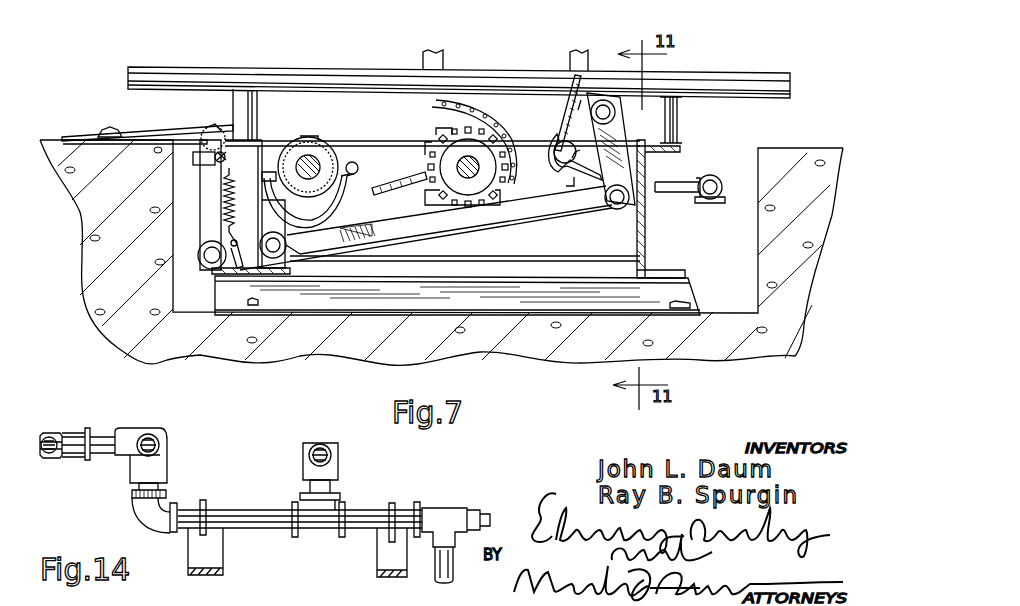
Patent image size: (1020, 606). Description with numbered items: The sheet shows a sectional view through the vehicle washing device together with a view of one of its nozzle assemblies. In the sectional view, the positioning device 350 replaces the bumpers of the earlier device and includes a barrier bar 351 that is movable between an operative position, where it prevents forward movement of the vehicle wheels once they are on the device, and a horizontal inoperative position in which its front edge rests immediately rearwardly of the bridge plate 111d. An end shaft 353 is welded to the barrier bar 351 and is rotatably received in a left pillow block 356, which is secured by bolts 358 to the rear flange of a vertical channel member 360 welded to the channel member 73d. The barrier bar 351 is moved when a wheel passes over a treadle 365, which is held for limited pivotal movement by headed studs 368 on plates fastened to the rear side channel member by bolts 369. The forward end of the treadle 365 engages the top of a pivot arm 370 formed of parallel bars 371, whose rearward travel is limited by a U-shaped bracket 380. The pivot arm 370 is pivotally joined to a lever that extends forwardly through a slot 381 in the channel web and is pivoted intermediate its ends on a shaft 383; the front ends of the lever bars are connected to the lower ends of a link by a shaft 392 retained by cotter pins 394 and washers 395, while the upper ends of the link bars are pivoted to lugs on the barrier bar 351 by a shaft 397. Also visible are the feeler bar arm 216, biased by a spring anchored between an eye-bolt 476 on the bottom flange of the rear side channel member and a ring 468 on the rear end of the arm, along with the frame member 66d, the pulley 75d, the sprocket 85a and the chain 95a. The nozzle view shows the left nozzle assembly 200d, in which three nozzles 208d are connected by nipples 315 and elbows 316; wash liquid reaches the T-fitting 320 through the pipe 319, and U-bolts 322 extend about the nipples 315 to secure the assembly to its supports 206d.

In FIG. 7, the headed studs 368 is at (108, 128).
In FIG. 7, the treadle 365 is at (164, 128).
In FIG. 7, the U-shaped bracket 380 is at (200, 150).
In FIG. 7, the bolts 369 is at (243, 135).
In FIG. 7, the pulley 75d is at (310, 137).
In FIG. 7, the sprocket 85a is at (436, 145).
In FIG. 7, the chain 95a is at (444, 118).
In FIG. 7, the positioning device 350 is at (571, 70).
In FIG. 7, the shaft 397 is at (610, 106).
In FIG. 7, the barrier bar 351 is at (572, 104).
In FIG. 7, the end shaft 353 is at (560, 142).
In FIG. 7, the left pillow block 356 is at (562, 172).
In FIG. 7, the vertical channel member 360 is at (677, 110).
In FIG. 7, the bridge plate 111d is at (726, 147).
In FIG. 7, the ring 468 is at (204, 165).
In FIG. 7, the slot 381 is at (234, 199).
In FIG. 7, the parallel bars 371 is at (200, 238).
In FIG. 7, the feeler bar arm 216 is at (345, 210).
In FIG. 7, the shaft 383 is at (288, 247).
In FIG. 7, the bolts 358 is at (570, 190).
In FIG. 7, the cotter pins 394 is at (610, 193).
In FIG. 7, the washers 395 is at (604, 212).
In FIG. 7, the shaft 392 is at (637, 210).
In FIG. 7, the pivot arm 370 is at (195, 243).
In FIG. 7, the eye-bolt 476 is at (222, 275).
In FIG. 7, the channel member 73d is at (580, 262).
In FIG. 7, the frame 66d is at (682, 287).
In FIG. 14, the nozzles 208d is at (52, 432).
In FIG. 14, the elbows 316 is at (116, 432).
In FIG. 14, the left nozzle assembly 200d is at (202, 447).
In FIG. 14, the U-bolts 322 is at (204, 500).
In FIG. 14, the nipples 315 is at (252, 510).
In FIG. 14, the support 206d is at (223, 553).
In FIG. 14, the T-fitting 320 is at (440, 508).
In FIG. 14, the pipe 319 is at (448, 568).